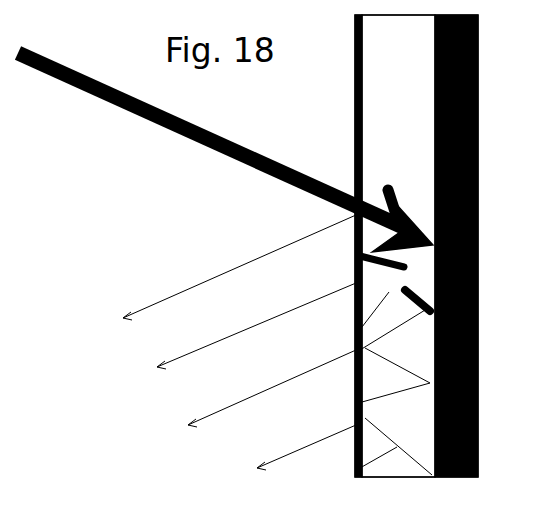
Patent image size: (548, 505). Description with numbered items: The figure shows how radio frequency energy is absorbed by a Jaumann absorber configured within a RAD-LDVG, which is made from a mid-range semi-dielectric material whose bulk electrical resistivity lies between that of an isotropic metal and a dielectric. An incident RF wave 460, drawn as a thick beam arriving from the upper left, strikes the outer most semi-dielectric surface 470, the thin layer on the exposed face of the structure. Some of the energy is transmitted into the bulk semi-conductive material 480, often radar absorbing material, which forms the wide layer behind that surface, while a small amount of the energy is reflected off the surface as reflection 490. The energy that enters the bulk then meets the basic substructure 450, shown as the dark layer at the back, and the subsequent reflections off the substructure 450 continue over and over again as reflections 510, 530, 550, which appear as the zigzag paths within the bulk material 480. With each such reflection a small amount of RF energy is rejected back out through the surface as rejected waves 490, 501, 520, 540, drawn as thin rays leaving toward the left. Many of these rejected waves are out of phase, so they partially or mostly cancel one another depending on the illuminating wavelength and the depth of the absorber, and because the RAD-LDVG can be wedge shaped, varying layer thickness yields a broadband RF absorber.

The basic substructure 450 is at (478, 155).
The incident RF wave 460 is at (225, 182).
The outer most semi-dielectric surface 470 is at (356, 141).
The bulk semi-conductive material 480 is at (398, 246).
The surface reflection 490 is at (215, 274).
The rejected RF wave 501 is at (233, 333).
The internal reflection 510 is at (362, 326).
The rejected RF wave 520 is at (249, 394).
The internal reflection 530 is at (362, 399).
The rejected RF wave 540 is at (278, 454).
The internal reflection 550 is at (362, 468).